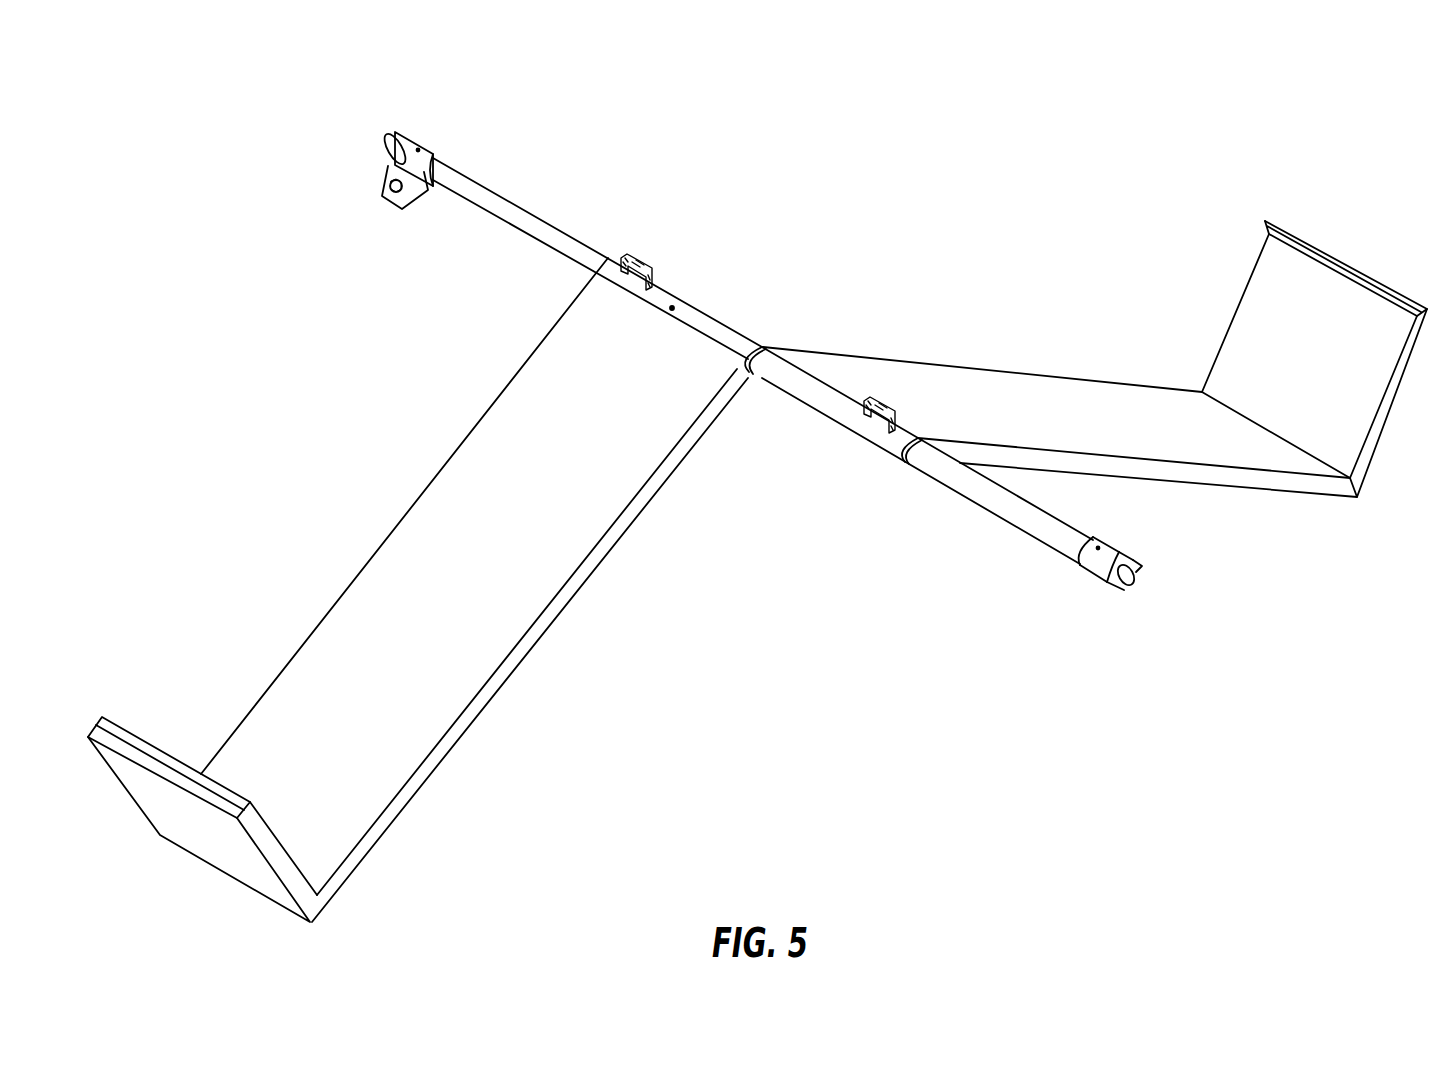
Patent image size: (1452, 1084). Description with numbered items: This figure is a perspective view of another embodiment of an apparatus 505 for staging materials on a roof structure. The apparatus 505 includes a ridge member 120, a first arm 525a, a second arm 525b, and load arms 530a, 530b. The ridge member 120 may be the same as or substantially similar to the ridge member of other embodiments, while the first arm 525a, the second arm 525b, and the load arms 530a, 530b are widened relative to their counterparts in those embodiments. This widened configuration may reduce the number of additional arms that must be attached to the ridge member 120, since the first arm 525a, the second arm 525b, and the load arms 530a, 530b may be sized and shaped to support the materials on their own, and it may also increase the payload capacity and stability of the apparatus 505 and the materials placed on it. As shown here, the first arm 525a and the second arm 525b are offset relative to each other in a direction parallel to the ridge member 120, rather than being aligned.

The apparatus 505 is at (1357, 94).
The ridge member 120 is at (1001, 500).
The first arm 525a is at (1005, 388).
The load arm 530a is at (1248, 340).
The second arm 525b is at (386, 551).
The load arm 530b is at (187, 815).